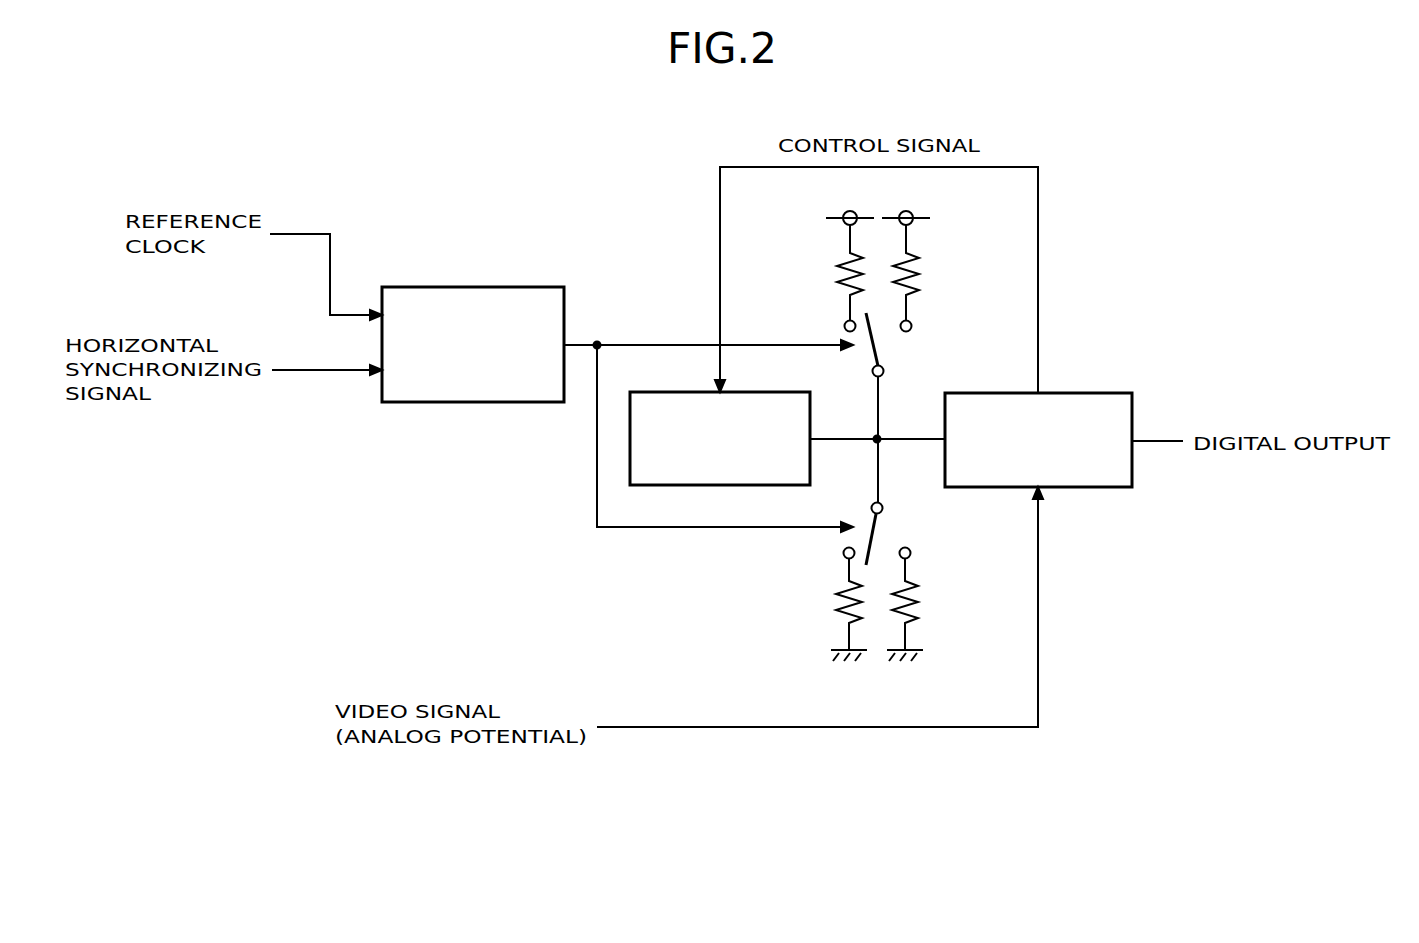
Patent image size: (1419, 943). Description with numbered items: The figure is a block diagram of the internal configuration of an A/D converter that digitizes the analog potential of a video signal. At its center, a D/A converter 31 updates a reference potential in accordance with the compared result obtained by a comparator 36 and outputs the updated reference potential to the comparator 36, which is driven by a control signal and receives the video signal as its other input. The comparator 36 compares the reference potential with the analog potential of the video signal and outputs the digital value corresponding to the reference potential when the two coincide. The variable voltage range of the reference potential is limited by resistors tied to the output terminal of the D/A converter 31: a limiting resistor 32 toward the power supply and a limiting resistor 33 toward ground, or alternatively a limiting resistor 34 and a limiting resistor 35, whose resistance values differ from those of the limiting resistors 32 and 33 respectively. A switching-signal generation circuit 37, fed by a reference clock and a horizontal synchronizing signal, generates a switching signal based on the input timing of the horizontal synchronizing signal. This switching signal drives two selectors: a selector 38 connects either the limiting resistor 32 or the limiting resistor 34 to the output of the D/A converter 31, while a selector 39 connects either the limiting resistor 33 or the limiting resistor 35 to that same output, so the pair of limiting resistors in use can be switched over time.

The D/A converter 31 is at (678, 390).
The limiting resistor 32 is at (828, 275).
The limiting resistor 33 is at (828, 601).
The limiting resistor 34 is at (922, 275).
The limiting resistor 35 is at (922, 601).
The comparator 36 is at (1094, 391).
The switching-signal generation circuit 37 is at (473, 286).
The selector 38 is at (893, 350).
The selector 39 is at (893, 528).